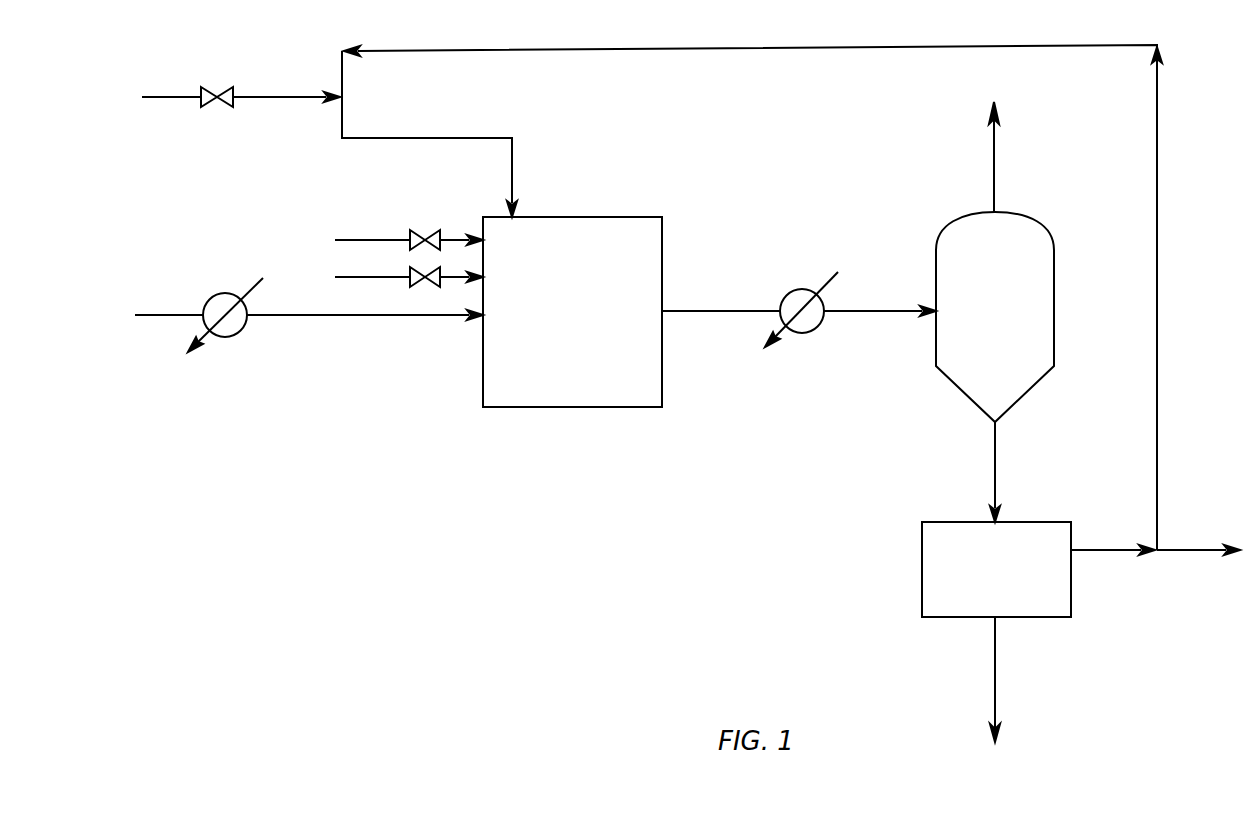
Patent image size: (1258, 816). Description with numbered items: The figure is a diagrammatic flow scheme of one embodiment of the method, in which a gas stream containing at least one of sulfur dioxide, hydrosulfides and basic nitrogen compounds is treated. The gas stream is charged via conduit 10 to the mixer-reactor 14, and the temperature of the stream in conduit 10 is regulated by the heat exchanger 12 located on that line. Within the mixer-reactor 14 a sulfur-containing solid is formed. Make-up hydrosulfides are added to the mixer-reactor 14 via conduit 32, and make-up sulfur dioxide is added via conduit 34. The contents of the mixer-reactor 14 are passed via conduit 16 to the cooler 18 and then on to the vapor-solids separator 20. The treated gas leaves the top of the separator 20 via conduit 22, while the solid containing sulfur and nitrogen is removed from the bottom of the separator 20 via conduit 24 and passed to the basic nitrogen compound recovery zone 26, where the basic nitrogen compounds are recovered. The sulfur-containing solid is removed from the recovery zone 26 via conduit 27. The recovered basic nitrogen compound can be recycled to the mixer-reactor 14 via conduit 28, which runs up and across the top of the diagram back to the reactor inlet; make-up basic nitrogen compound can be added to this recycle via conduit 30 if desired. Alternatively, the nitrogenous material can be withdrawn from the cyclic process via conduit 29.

The conduit 10 is at (163, 313).
The heat exchanger 12 is at (222, 290).
The mixer-reactor 14 is at (588, 319).
The conduit 16 is at (708, 310).
The cooler 18 is at (802, 334).
The vapor-solids separator 20 is at (1008, 315).
The conduit 22 is at (993, 165).
The conduit 24 is at (997, 472).
The basic nitrogen compound recovery zone 26 is at (1010, 582).
The conduit 27 is at (997, 680).
The conduit 28 is at (1157, 466).
The conduit 29 is at (1199, 552).
The conduit 30 is at (273, 95).
The conduit 32 is at (393, 238).
The conduit 34 is at (350, 276).